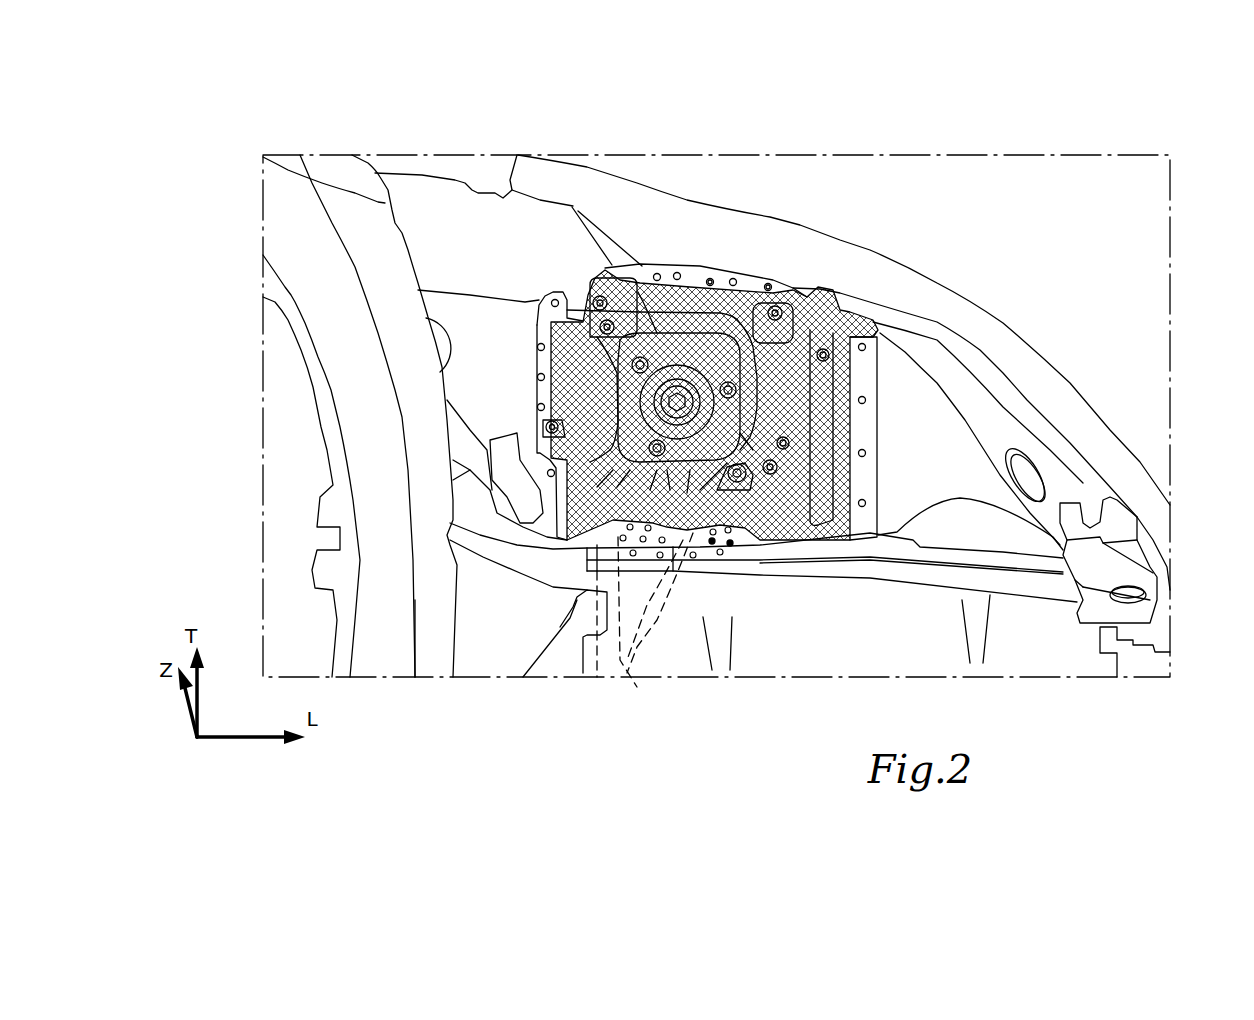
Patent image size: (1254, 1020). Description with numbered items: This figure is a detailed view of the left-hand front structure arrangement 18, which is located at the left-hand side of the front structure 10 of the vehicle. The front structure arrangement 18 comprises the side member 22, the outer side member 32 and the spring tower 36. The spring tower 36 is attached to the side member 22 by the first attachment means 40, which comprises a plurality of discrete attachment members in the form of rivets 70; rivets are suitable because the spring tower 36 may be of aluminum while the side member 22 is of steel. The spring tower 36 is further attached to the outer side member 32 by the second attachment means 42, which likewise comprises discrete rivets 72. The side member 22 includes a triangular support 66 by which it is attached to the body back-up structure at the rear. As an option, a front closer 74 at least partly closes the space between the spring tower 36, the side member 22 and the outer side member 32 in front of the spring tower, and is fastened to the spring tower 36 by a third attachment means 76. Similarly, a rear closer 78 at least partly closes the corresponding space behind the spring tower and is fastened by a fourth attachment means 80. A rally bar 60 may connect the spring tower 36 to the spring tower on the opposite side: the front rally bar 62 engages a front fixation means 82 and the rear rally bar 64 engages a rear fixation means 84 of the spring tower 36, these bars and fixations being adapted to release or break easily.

The front structure 10 is at (1030, 207).
The front structure arrangement 18 is at (1199, 131).
The side member 22 is at (848, 622).
The outer side member 32 is at (803, 254).
The spring tower 36 is at (612, 338).
The first attachment means 40 is at (680, 545).
The second attachment means 42 is at (693, 272).
The rally bar 60 is at (674, 653).
The front rally bar 62 is at (637, 687).
The rear rally bar 64 is at (597, 677).
The triangular support 66 is at (510, 637).
The rivets 70 is at (730, 546).
The rivets 72 is at (768, 287).
The front closer 74 is at (958, 442).
The third attachment means 76 is at (877, 422).
The rear closer 78 is at (475, 385).
The fourth attachment means 80 is at (537, 358).
The front fixation means 82 is at (740, 480).
The rear fixation means 84 is at (600, 458).